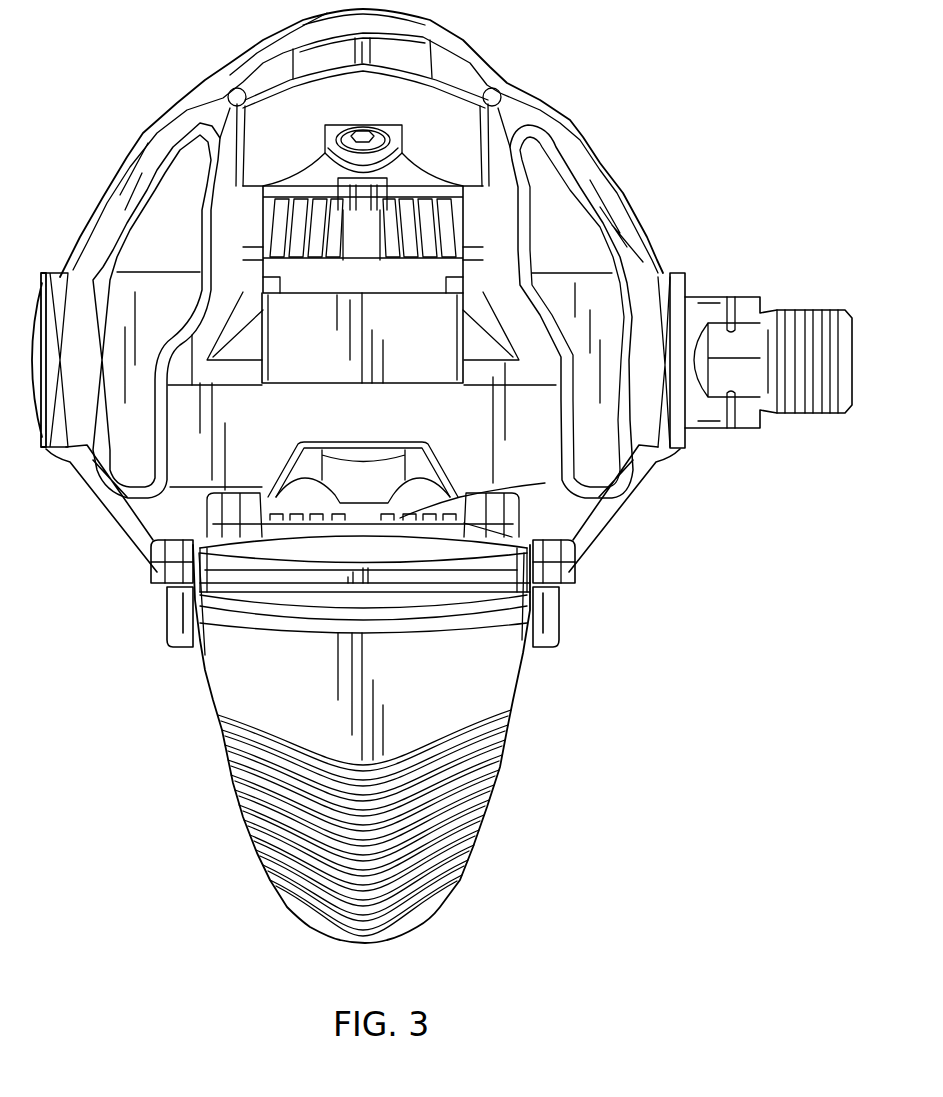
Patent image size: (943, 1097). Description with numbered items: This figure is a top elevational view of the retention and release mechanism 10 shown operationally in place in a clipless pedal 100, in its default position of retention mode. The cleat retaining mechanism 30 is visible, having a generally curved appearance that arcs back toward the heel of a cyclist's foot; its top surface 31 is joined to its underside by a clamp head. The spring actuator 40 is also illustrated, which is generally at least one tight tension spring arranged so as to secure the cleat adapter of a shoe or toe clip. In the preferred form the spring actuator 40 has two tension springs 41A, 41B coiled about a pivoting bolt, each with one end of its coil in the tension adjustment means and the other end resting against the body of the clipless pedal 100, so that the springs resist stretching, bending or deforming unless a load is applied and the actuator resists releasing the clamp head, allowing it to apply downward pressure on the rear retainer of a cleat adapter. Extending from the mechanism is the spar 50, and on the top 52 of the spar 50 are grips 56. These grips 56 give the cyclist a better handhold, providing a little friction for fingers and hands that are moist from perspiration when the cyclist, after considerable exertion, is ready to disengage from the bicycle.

The retention and release mechanism 10 is at (442, 476).
The cleat retaining mechanism 30 is at (155, 577).
The top surface 31 is at (508, 572).
The spring actuator 40 is at (137, 488).
The tension spring 41A is at (545, 483).
The tension spring 41B is at (270, 517).
The spar 50 is at (365, 744).
The top 52 is at (500, 683).
The grips 56 is at (233, 785).
The clipless pedal 100 is at (560, 108).